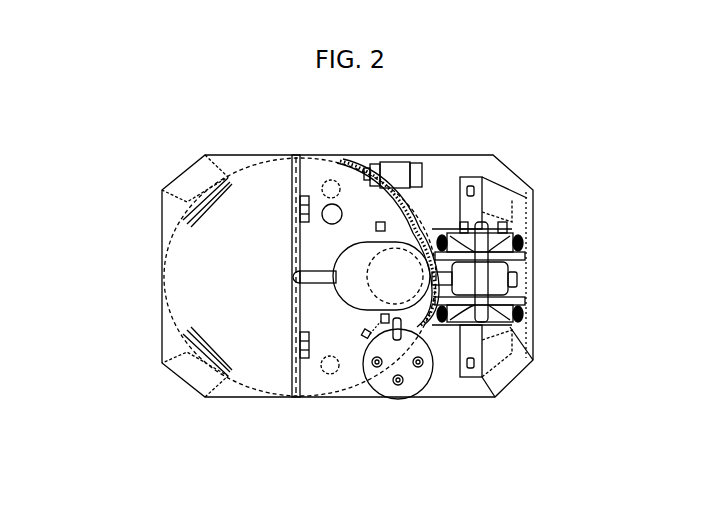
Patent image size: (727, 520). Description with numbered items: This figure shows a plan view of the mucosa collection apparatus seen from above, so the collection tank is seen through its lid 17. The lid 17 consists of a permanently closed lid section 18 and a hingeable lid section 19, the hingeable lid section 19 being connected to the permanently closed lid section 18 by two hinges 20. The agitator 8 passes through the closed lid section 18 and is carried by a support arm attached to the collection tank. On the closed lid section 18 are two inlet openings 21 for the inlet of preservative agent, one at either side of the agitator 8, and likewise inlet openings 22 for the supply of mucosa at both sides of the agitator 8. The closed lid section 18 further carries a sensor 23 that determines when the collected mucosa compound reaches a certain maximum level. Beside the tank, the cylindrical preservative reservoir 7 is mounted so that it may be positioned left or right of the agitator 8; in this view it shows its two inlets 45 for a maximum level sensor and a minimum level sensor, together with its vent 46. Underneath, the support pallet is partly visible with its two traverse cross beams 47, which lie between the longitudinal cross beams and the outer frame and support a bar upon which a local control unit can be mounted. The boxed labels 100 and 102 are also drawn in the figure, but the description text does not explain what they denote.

The preservative reservoir 7 is at (402, 364).
The agitator 8 is at (432, 277).
The lid 17 is at (197, 295).
The permanently closed lid section 18 is at (307, 378).
The hingeable lid section 19 is at (200, 312).
The hinges 20 is at (303, 203).
The inlet openings for preservative agent 21 is at (388, 320).
The inlet openings for mucosa 22 is at (333, 183).
The sensor 23 is at (305, 218).
The inlets 45 is at (378, 366).
The vent 46 is at (399, 384).
The traverse cross beams 47 is at (473, 211).
The controller 100 is at (290, 130).
The sensor 102 is at (309, 158).